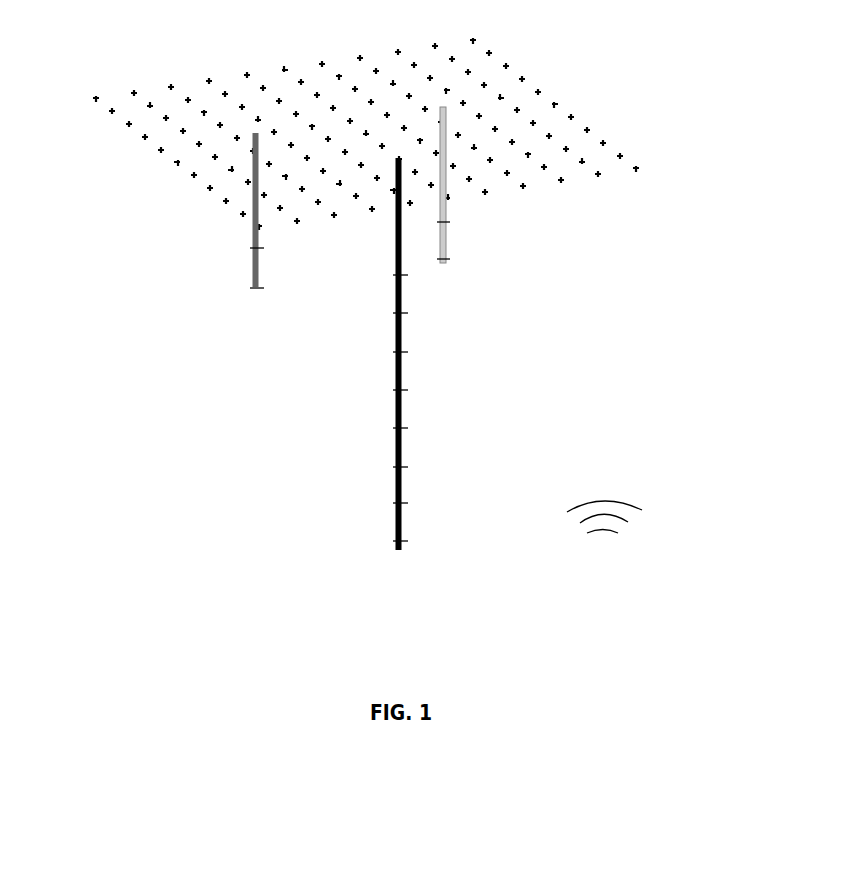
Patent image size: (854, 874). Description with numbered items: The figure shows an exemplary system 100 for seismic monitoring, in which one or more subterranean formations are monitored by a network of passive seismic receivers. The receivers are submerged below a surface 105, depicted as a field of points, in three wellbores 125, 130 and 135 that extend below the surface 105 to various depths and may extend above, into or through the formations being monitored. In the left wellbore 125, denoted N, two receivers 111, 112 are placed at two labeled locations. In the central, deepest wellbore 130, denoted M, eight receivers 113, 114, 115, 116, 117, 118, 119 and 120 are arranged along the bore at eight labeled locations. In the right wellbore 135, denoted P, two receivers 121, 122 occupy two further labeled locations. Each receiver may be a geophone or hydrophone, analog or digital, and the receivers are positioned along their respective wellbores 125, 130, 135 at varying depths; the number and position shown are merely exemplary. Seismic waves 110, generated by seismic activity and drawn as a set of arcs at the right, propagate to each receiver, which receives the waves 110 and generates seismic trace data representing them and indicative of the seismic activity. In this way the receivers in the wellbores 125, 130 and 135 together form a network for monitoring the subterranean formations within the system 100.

The system for seismic monitoring 100 is at (580, 44).
The surface 105 is at (197, 88).
The seismic waves 110 is at (638, 527).
The seismic receiver 111 is at (255, 250).
The seismic receiver 112 is at (255, 289).
The seismic receiver 113 is at (397, 275).
The seismic receiver 114 is at (397, 313).
The seismic receiver 115 is at (397, 352).
The seismic receiver 116 is at (397, 390).
The seismic receiver 117 is at (397, 428).
The seismic receiver 118 is at (397, 467).
The seismic receiver 119 is at (397, 503).
The seismic receiver 120 is at (397, 541).
The seismic receiver 121 is at (497, 222).
The seismic receiver 122 is at (480, 268).
The wellbore 125 is at (253, 198).
The wellbore 130 is at (396, 228).
The wellbore 135 is at (447, 181).